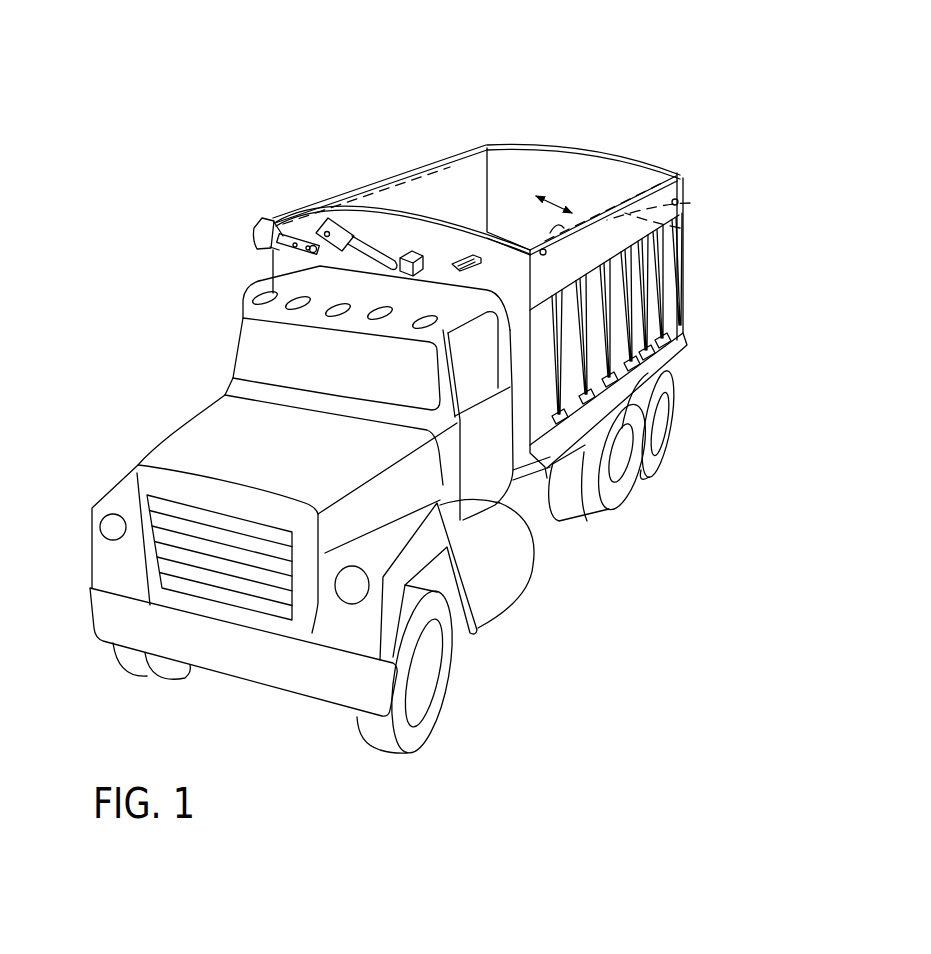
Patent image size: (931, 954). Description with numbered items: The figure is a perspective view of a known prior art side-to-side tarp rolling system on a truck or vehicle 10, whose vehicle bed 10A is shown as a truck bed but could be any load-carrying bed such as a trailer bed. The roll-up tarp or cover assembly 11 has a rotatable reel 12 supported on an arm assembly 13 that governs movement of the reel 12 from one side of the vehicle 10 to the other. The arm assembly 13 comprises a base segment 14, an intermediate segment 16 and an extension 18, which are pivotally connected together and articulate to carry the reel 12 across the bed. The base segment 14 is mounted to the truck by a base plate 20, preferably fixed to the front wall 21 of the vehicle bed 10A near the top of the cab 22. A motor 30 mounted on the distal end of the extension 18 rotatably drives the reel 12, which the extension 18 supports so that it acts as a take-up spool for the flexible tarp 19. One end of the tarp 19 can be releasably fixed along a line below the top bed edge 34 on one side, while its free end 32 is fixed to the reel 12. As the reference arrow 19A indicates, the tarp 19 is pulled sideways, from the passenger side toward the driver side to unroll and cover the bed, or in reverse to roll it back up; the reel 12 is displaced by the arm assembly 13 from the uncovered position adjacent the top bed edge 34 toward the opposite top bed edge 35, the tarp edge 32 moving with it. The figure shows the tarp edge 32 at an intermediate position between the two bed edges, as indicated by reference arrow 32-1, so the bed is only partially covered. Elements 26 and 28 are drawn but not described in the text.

The vehicle 10 is at (366, 108).
The vehicle bed 10A is at (570, 233).
The roll-up tarp or cover assembly 11 is at (396, 168).
The rotatable reel 12 is at (445, 155).
The arm assembly 13 is at (248, 250).
The base segment 14 is at (378, 258).
The intermediate segment 16 is at (322, 262).
The extension 18 is at (273, 252).
The flexible tarp 19 is at (680, 228).
The reference arrow 19A is at (553, 195).
The base plate 20 is at (417, 254).
The front wall 21 is at (520, 341).
The cab 22 is at (243, 313).
The bracket 26 is at (480, 261).
The pivot block 28 is at (345, 230).
The motor 30 is at (258, 232).
The free end of the tarp 32 is at (420, 168).
The reference arrow 32-1 is at (690, 203).
The top bed edge 34 is at (297, 208).
The top bed edge 35 is at (593, 150).